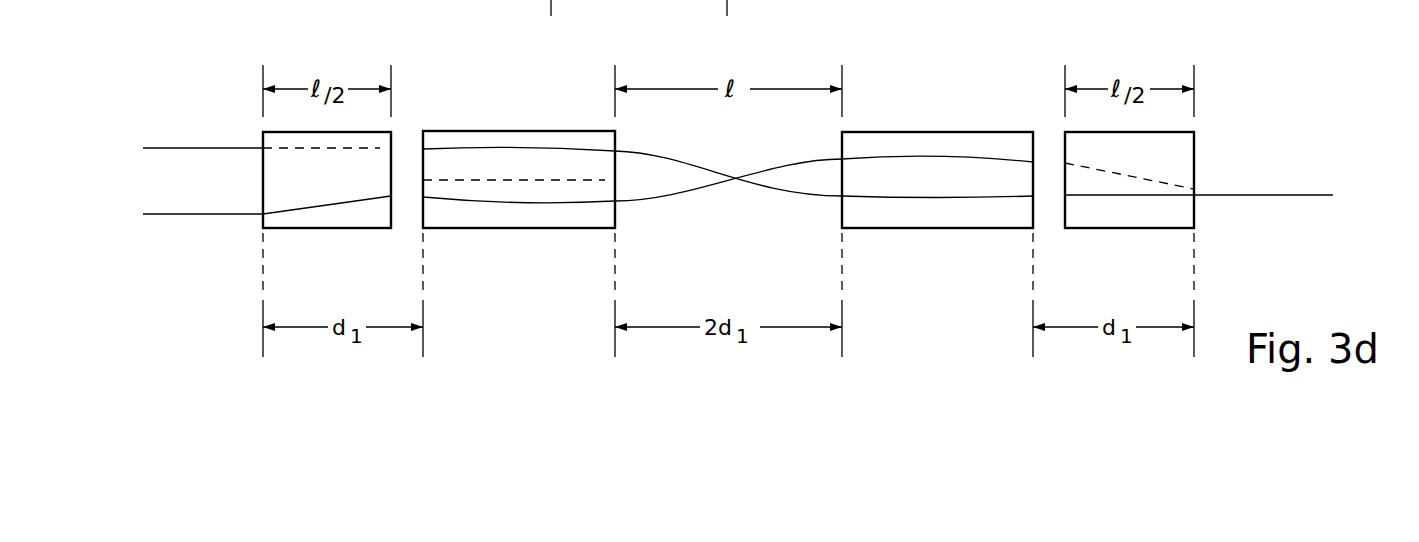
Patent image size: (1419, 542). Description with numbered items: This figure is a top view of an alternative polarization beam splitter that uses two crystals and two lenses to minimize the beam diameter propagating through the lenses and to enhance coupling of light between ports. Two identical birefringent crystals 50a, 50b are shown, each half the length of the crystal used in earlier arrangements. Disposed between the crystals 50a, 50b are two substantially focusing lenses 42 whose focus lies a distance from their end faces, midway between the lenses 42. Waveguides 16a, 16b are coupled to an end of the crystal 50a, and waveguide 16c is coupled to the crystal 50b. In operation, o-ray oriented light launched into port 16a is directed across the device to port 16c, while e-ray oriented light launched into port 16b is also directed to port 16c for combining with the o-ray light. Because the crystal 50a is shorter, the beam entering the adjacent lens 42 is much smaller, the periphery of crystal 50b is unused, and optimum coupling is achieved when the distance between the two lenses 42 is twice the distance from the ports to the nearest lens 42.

The optical fibre 16a is at (200, 148).
The waveguide 16b is at (225, 215).
The waveguide 16c is at (1250, 192).
The birefringent crystal 50a is at (262, 130).
The birefringent crystal 50b is at (1195, 143).
The lens 42 is at (565, 229).